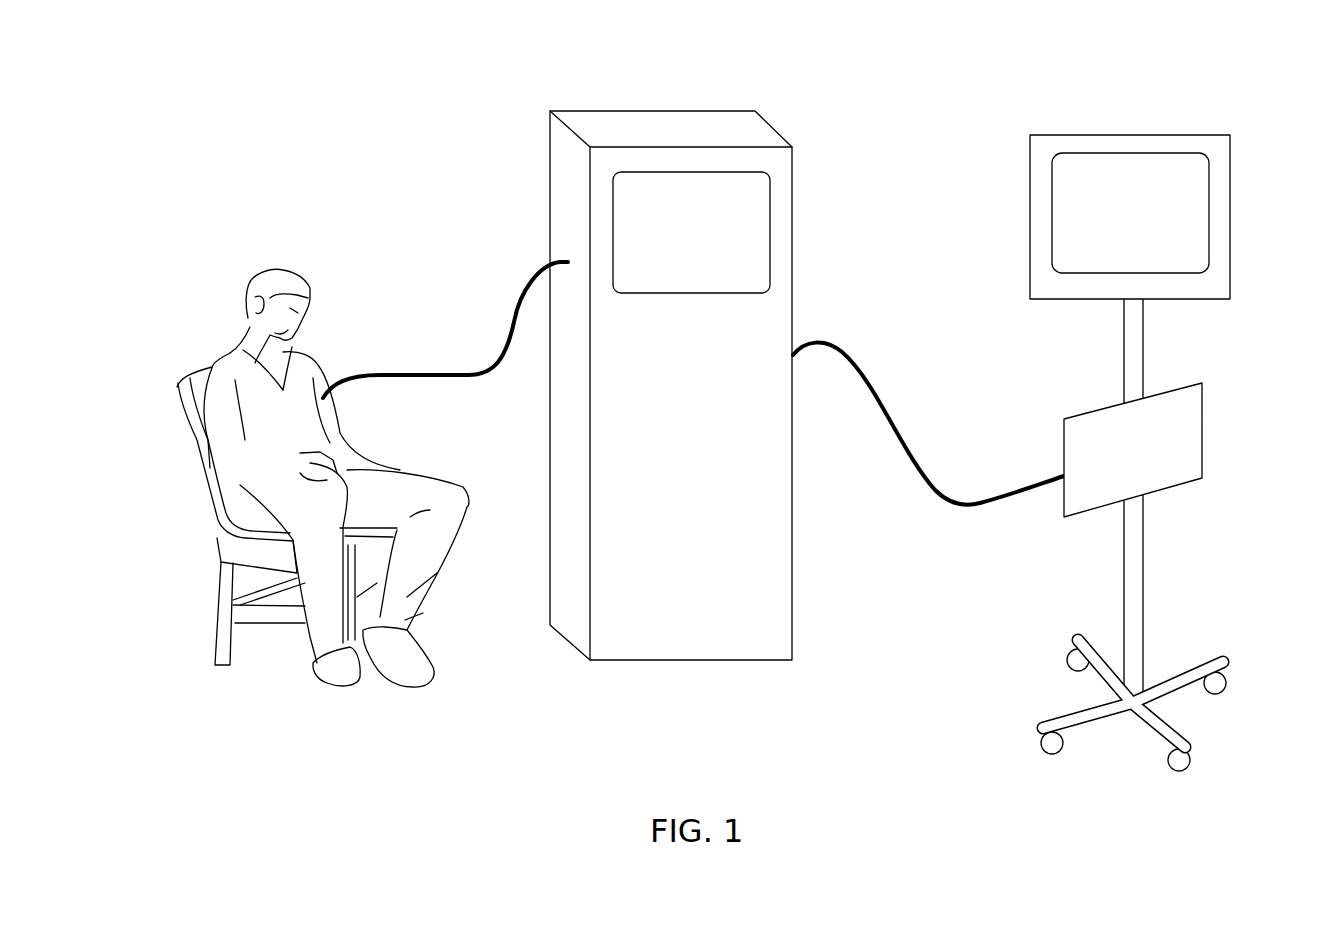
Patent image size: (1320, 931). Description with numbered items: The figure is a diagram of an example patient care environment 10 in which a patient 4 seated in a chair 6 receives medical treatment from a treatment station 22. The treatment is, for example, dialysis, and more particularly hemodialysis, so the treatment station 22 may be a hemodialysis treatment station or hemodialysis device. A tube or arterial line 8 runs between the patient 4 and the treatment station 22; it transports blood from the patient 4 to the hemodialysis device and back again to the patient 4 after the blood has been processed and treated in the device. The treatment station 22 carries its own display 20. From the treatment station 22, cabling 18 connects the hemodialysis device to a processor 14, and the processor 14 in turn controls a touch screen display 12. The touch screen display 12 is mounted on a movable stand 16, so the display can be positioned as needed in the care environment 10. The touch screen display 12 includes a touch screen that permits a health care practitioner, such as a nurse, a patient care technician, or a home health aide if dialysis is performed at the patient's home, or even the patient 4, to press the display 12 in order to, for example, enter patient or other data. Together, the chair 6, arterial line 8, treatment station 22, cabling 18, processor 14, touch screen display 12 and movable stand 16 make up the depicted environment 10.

The patient 4 is at (268, 270).
The chair 6 is at (202, 468).
The arterial line 8 is at (488, 363).
The patient care environment 10 is at (362, 154).
The touch screen display 12 is at (1112, 134).
The processor 14 is at (1098, 408).
The movable stand 16 is at (1194, 663).
The cabling 18 is at (937, 500).
The display 20 is at (715, 223).
The treatment station 22 is at (549, 186).